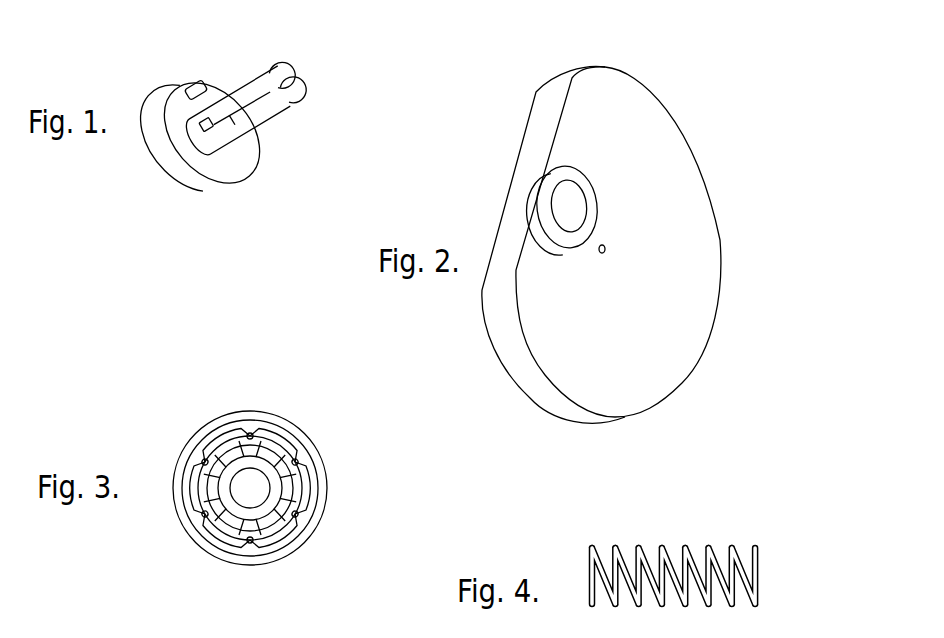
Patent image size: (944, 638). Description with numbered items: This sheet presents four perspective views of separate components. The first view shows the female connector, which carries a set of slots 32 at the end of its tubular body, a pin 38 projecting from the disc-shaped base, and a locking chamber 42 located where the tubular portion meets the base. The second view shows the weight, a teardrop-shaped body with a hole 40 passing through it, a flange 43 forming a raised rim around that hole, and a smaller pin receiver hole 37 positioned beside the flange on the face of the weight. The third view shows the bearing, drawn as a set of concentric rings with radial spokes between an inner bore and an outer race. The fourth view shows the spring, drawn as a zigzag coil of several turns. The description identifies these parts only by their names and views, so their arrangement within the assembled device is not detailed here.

In FIG. 1, the locking chamber 42 is at (200, 122).
In FIG. 1, the pin 38 is at (205, 80).
In FIG. 1, the set of slots 32 is at (302, 72).
In FIG. 2, the hole 40 is at (567, 202).
In FIG. 2, the flange 43 is at (592, 202).
In FIG. 2, the pin receiver hole 37 is at (605, 252).